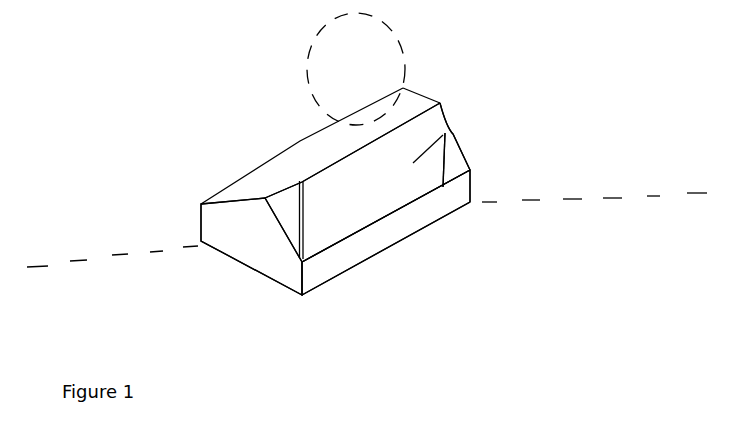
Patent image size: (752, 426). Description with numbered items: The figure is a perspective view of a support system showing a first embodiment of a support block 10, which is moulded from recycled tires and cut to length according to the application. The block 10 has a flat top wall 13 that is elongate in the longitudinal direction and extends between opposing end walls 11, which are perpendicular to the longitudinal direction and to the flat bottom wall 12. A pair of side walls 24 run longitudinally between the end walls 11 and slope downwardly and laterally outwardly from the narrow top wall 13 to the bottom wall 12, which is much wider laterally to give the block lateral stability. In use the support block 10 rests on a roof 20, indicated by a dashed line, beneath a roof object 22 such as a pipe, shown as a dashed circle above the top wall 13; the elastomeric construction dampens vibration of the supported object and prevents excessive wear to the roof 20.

The support block 10 is at (293, 117).
The end walls 11 is at (243, 232).
The bottom wall 12 is at (377, 256).
The top wall 13 is at (397, 110).
The roof 20 is at (605, 200).
The roof object 22 is at (393, 19).
The side walls 24 is at (452, 131).